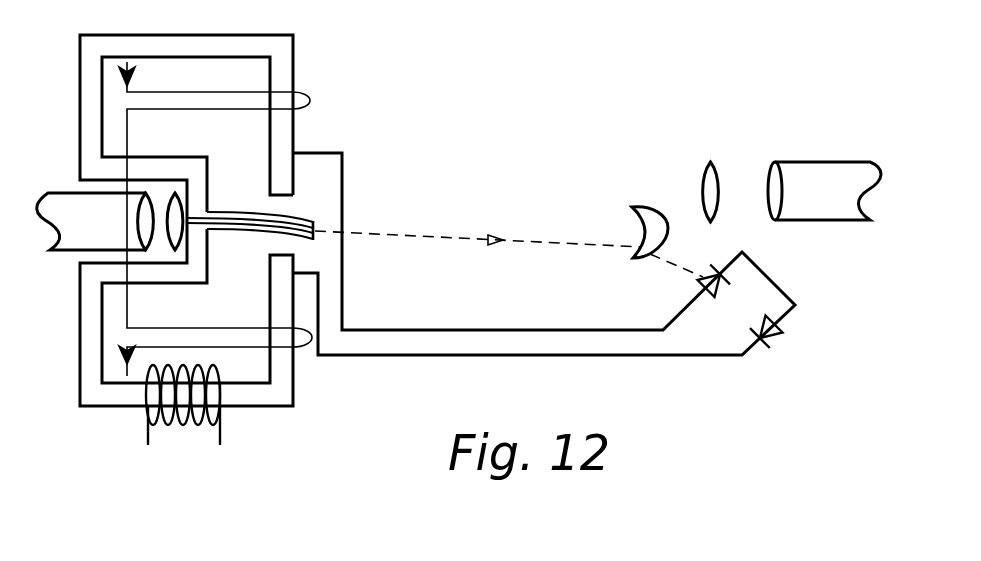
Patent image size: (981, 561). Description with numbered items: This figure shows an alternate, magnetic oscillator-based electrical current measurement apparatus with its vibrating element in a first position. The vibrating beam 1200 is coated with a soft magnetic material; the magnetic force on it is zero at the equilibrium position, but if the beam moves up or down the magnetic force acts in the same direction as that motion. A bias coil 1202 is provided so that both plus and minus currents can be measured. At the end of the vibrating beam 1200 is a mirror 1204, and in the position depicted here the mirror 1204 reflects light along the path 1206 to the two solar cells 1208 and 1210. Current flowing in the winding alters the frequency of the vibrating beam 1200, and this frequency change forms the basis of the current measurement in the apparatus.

The vibrating beam 1200 is at (233, 213).
The bias coil 1202 is at (143, 415).
The mirror 1204 is at (315, 227).
The path 1206 is at (453, 238).
The solar cell 1208 is at (778, 335).
The solar cell 1210 is at (700, 274).